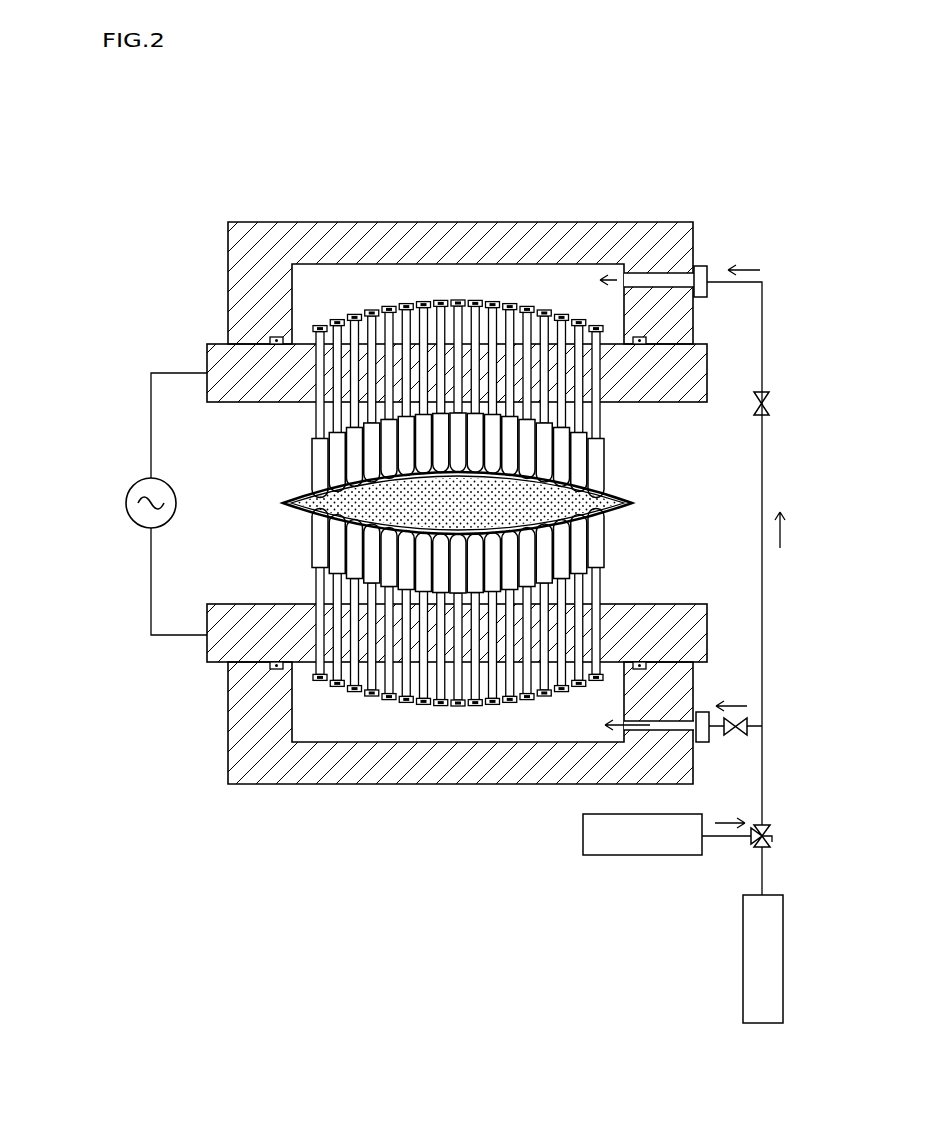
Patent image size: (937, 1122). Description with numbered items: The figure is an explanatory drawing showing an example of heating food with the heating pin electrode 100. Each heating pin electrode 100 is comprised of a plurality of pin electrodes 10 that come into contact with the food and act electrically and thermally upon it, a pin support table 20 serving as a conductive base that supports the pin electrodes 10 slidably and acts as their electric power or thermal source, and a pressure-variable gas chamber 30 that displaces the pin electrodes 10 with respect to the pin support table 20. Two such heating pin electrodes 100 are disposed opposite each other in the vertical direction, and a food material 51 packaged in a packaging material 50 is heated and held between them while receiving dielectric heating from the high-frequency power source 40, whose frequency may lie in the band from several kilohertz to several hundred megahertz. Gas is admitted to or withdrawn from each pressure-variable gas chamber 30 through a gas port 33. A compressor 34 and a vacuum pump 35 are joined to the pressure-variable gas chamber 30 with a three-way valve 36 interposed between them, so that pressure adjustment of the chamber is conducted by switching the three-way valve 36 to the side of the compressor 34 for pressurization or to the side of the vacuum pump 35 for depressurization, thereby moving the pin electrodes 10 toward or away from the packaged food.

The heating pin electrode 100 is at (371, 494).
The pressure-variable gas chamber 30 is at (606, 202).
The pin support table 20 is at (212, 326).
The pin electrode 10 is at (302, 433).
The gas port 33 is at (704, 265).
The high-frequency power source 40 is at (165, 523).
The packaging material 50 is at (620, 508).
The food material 51 is at (571, 492).
The compressor 34 is at (652, 857).
The vacuum pump 35 is at (740, 950).
The three-way valve 36 is at (773, 819).